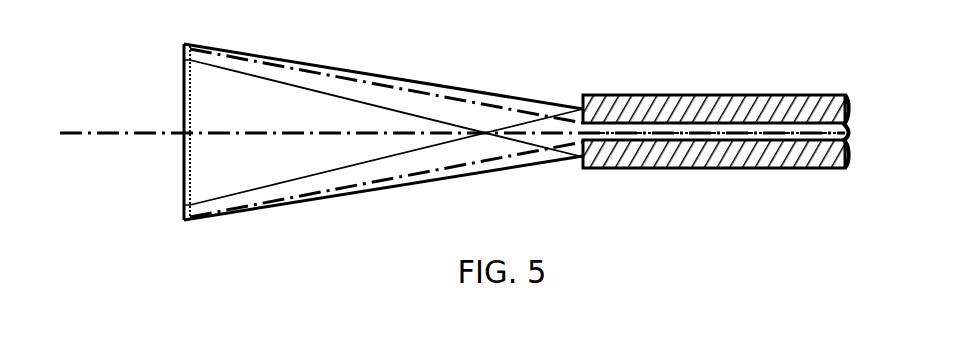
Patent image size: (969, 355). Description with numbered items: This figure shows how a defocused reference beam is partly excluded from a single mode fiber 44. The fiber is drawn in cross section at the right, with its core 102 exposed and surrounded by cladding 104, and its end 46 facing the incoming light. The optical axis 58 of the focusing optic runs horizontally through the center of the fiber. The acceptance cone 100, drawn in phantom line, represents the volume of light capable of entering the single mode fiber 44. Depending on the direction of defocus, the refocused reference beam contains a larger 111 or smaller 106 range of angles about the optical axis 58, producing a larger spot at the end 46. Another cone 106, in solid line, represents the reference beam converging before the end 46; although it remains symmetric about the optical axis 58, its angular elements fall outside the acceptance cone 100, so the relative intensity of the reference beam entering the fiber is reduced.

The single mode fiber 44 is at (716, 144).
The end of the single mode fiber 46 is at (576, 108).
The optical axis 58 is at (80, 132).
The acceptance cone 100 is at (440, 97).
The core 102 is at (846, 133).
The cladding 104 is at (752, 108).
The cone 106 is at (307, 88).
The larger range of angles 111 is at (490, 174).